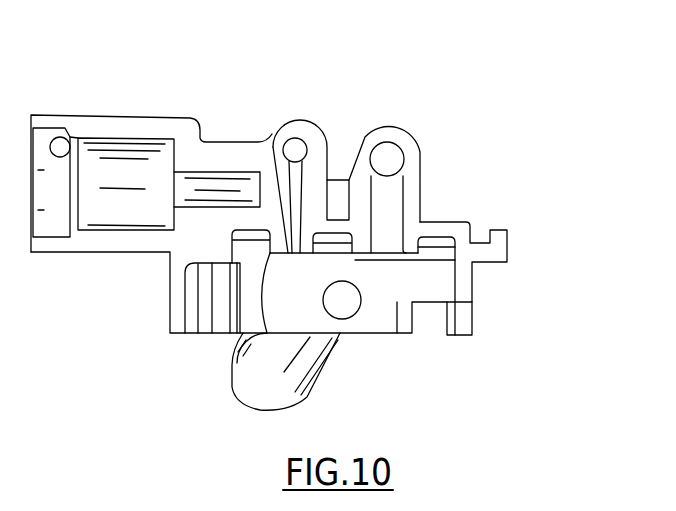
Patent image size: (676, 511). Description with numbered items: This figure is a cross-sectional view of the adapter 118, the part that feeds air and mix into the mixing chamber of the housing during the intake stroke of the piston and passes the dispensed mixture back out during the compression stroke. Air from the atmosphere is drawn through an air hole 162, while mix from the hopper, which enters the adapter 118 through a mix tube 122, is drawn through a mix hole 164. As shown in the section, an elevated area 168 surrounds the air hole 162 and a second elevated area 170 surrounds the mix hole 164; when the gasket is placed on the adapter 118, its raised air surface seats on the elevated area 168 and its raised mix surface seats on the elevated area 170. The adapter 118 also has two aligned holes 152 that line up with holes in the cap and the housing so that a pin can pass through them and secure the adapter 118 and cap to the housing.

The adapter 118 is at (269, 225).
The air hole 162 is at (273, 140).
The mix hole 164 is at (388, 253).
The elevated area 170 is at (426, 255).
The elevated area 168 is at (237, 363).
The aligned holes 152 is at (353, 312).
The mix tube 122 is at (320, 377).